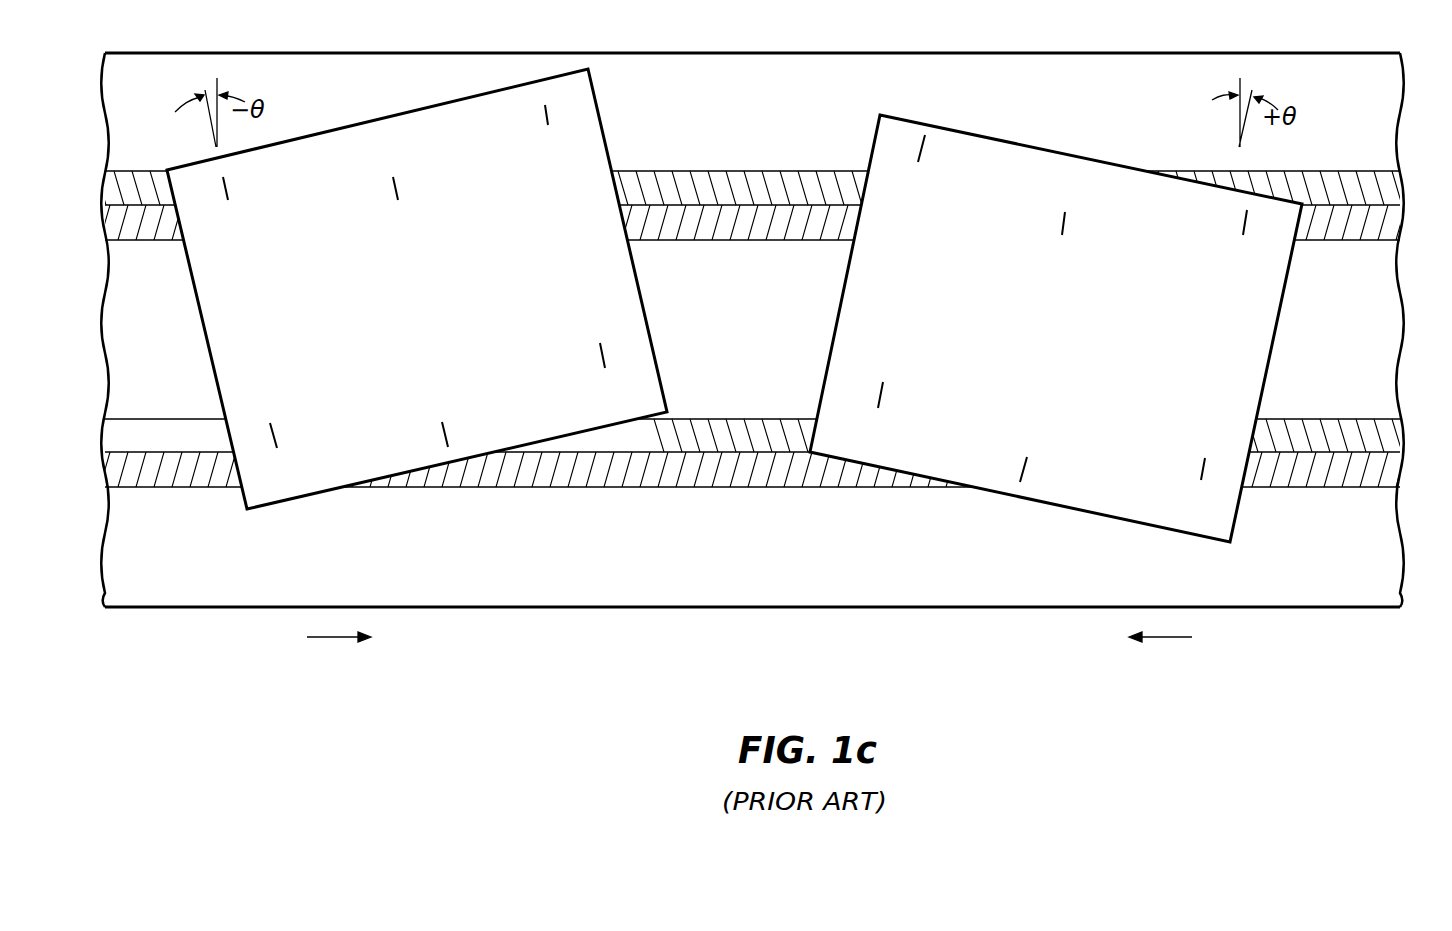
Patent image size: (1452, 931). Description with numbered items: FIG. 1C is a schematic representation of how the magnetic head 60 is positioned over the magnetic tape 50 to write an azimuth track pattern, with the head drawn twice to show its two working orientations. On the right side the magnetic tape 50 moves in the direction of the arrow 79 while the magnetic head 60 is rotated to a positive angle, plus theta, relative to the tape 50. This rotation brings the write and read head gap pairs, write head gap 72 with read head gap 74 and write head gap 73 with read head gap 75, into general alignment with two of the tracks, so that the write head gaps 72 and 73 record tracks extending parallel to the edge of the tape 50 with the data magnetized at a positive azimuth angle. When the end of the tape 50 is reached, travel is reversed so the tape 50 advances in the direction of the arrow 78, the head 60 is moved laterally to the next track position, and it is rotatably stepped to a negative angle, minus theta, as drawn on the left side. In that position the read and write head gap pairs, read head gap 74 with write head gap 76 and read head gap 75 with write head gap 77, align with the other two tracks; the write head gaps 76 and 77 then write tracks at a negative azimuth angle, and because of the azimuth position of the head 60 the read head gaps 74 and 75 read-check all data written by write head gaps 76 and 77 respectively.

The magnetic tape 50 is at (733, 607).
The magnetic head 60 is at (940, 125).
The write head gap 72 is at (547, 118).
The write head gap 73 is at (602, 355).
The read head gap 74 is at (396, 190).
The read head gap 75 is at (445, 435).
The write head gap 76 is at (226, 190).
The write head gap 77 is at (273, 433).
The arrow 78 is at (330, 637).
The arrow 79 is at (1165, 637).